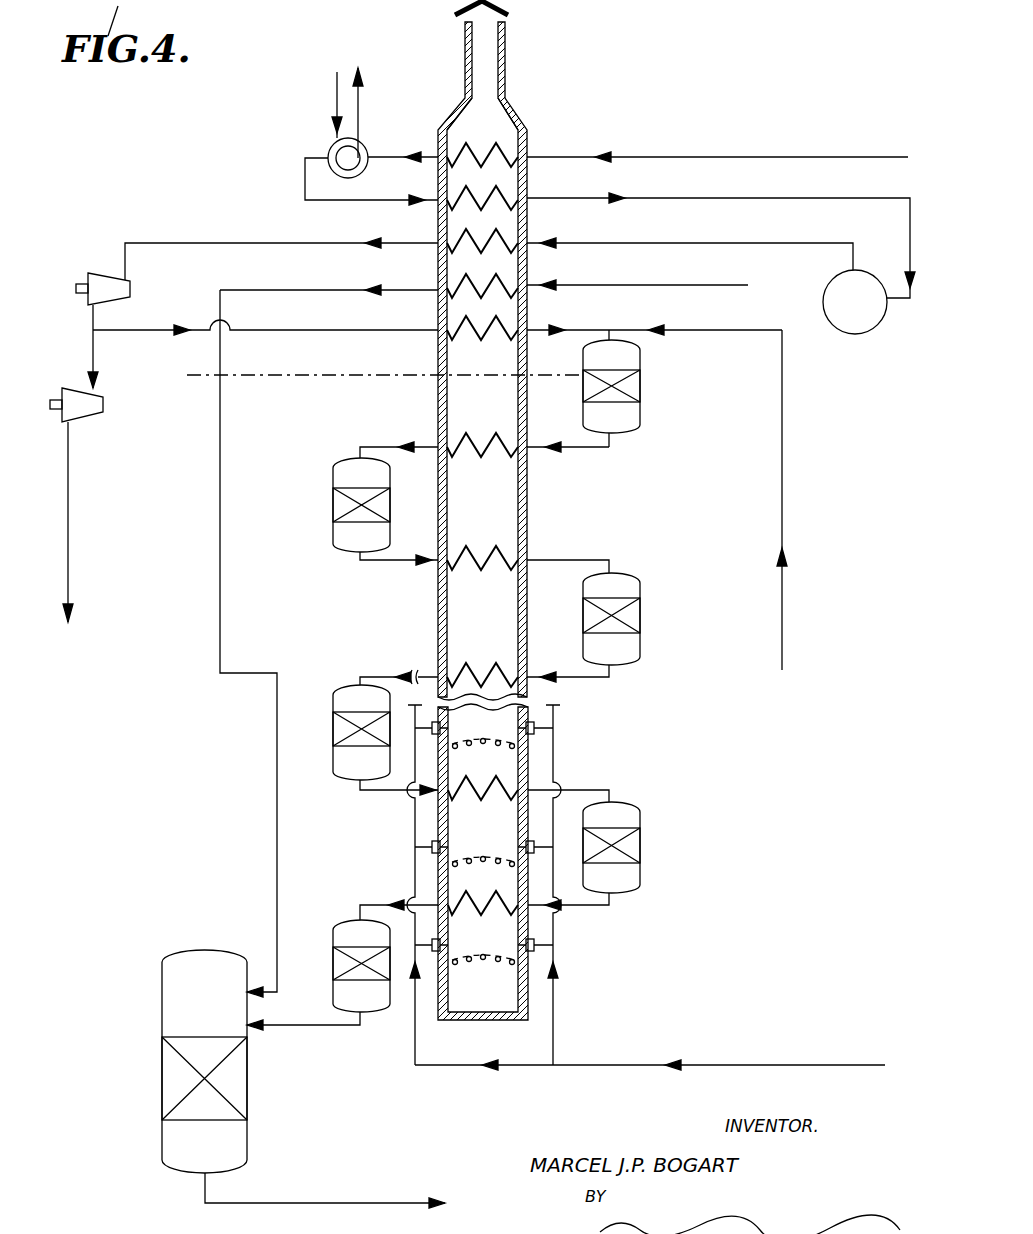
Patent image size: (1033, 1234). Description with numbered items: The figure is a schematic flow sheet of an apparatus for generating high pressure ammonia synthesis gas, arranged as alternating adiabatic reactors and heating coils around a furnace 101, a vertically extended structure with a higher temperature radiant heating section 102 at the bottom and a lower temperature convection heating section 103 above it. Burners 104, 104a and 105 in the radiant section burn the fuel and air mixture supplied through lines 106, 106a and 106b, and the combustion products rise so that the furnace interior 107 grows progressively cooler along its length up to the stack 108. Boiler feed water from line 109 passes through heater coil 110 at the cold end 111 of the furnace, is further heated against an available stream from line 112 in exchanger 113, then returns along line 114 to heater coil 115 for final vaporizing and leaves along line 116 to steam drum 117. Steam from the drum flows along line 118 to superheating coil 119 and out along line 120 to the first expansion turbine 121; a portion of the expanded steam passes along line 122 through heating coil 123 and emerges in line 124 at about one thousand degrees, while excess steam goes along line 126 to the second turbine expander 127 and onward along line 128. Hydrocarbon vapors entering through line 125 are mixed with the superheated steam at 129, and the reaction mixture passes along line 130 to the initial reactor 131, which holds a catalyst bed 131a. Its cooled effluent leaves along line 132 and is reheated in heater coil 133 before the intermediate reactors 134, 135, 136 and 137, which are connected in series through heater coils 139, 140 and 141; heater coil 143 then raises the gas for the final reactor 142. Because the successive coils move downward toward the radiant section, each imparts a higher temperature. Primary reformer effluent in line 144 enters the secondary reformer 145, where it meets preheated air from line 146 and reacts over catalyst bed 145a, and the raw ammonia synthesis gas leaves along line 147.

The furnace 101 is at (548, 545).
The radiant heating section 102 is at (488, 939).
The convection heating section 103 is at (485, 277).
The burner 104 is at (495, 845).
The burner 104a is at (503, 736).
The burner 105 is at (470, 975).
The fuel and air line 106 is at (580, 1067).
The fuel and air line 106a is at (553, 997).
The fuel and air line 106b is at (433, 722).
The furnace interior 107 is at (497, 518).
The stack 108 is at (505, 62).
The boiler feed water line 109 is at (815, 160).
The heater coil 110 is at (498, 150).
The cold end of furnace 111 is at (482, 120).
The available stream line 112 is at (362, 108).
The exchanger 113 is at (330, 150).
The line 114 is at (305, 180).
The heater coil 115 is at (500, 197).
The saturated steam line 116 is at (655, 198).
The steam drum 117 is at (850, 335).
The line 118 is at (835, 242).
The superheating coil 119 is at (500, 237).
The superheated steam line 120 is at (378, 245).
The first expansion turbine 121 is at (100, 273).
The line 122 is at (195, 335).
The heating coil 123 is at (470, 337).
The line 124 is at (582, 336).
The hydrocarbon vapor line 125 is at (782, 485).
The excess steam line 126 is at (93, 360).
The second turbine expander 127 is at (80, 425).
The line 128 is at (68, 545).
The mixing point 129 is at (612, 328).
The line 130 is at (612, 338).
The initial reactor 131 is at (632, 430).
The catalyst bed 131a is at (633, 388).
The line 132 is at (612, 448).
The heater coil 133 is at (478, 460).
The intermediate reactor 134 is at (333, 508).
The intermediate reactor 135 is at (640, 613).
The intermediate reactor 136 is at (333, 712).
The intermediate reactor 137 is at (640, 816).
The heater coil 139 is at (475, 575).
The heater coil 140 is at (505, 672).
The heater coil 141 is at (500, 785).
The final reactor 142 is at (333, 945).
The heater coil 143 is at (490, 900).
The primary reformer effluent line 144 is at (285, 1040).
The secondary reformer 145 is at (172, 972).
The catalyst bed 145a is at (165, 1090).
The air line 146 is at (715, 290).
The raw ammonia synthesis gas line 147 is at (200, 1185).